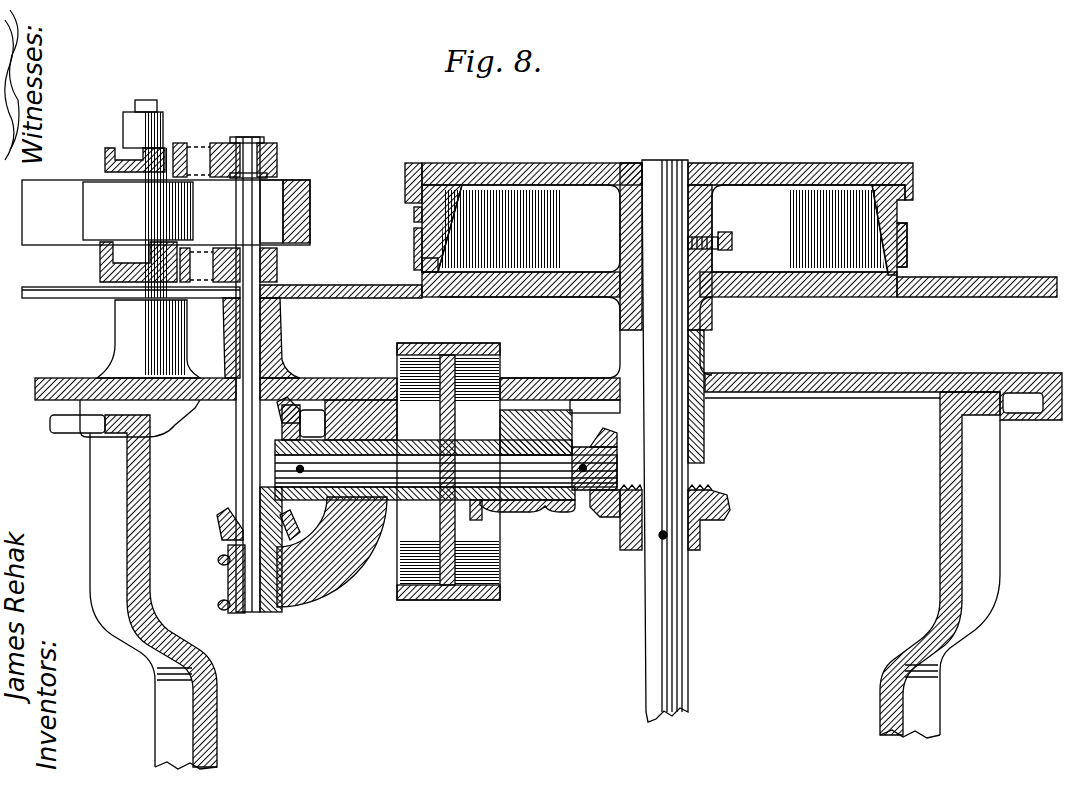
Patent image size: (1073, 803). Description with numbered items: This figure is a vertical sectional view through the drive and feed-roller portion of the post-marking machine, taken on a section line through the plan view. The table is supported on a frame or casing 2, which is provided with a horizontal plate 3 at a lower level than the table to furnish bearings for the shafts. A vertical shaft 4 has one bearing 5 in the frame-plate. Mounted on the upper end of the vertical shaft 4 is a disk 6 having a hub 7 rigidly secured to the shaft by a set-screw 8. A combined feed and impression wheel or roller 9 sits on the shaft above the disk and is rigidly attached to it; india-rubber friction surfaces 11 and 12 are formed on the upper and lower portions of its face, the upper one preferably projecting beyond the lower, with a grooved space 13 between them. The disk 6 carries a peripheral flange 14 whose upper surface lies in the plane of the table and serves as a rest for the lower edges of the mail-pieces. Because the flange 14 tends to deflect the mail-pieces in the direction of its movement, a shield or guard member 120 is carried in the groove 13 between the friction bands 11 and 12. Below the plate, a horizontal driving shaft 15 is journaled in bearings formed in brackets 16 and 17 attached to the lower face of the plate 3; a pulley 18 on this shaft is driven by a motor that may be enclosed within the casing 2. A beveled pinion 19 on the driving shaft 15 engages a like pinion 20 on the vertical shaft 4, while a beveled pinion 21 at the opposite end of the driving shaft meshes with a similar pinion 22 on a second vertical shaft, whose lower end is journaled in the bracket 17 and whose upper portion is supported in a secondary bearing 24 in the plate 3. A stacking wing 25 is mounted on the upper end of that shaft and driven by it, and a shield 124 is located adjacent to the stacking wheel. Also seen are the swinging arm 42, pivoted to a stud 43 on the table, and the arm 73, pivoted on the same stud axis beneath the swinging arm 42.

The frame or casing 2 is at (995, 533).
The horizontal plate 3 is at (795, 375).
The vertical shaft 4 is at (684, 596).
The bearing 5 is at (705, 432).
The disk 6 is at (842, 298).
The hub 7 is at (608, 180).
The set-screw 8 is at (726, 240).
The combined feed and impression wheel or roller 9 is at (745, 166).
The friction surface 11 is at (404, 178).
The friction surface 12 is at (420, 258).
The grooved space 13 is at (410, 229).
The peripheral flange 14 is at (318, 281).
The horizontal driving shaft 15 is at (428, 498).
The bracket 16 is at (533, 504).
The bracket 17 is at (341, 590).
The pulley 18 is at (443, 601).
The beveled pinion 19 is at (588, 500).
The beveled pinion 20 is at (623, 520).
The beveled pinion 21 is at (283, 428).
The beveled pinion 22 is at (220, 532).
The secondary bearing 24 is at (282, 340).
The stacking wing 25 is at (220, 143).
The swinging arm 42 is at (103, 160).
The stud 43 is at (141, 98).
The arm 73 is at (98, 272).
The shield or guard member 120 is at (412, 213).
The shield 124 is at (306, 178).